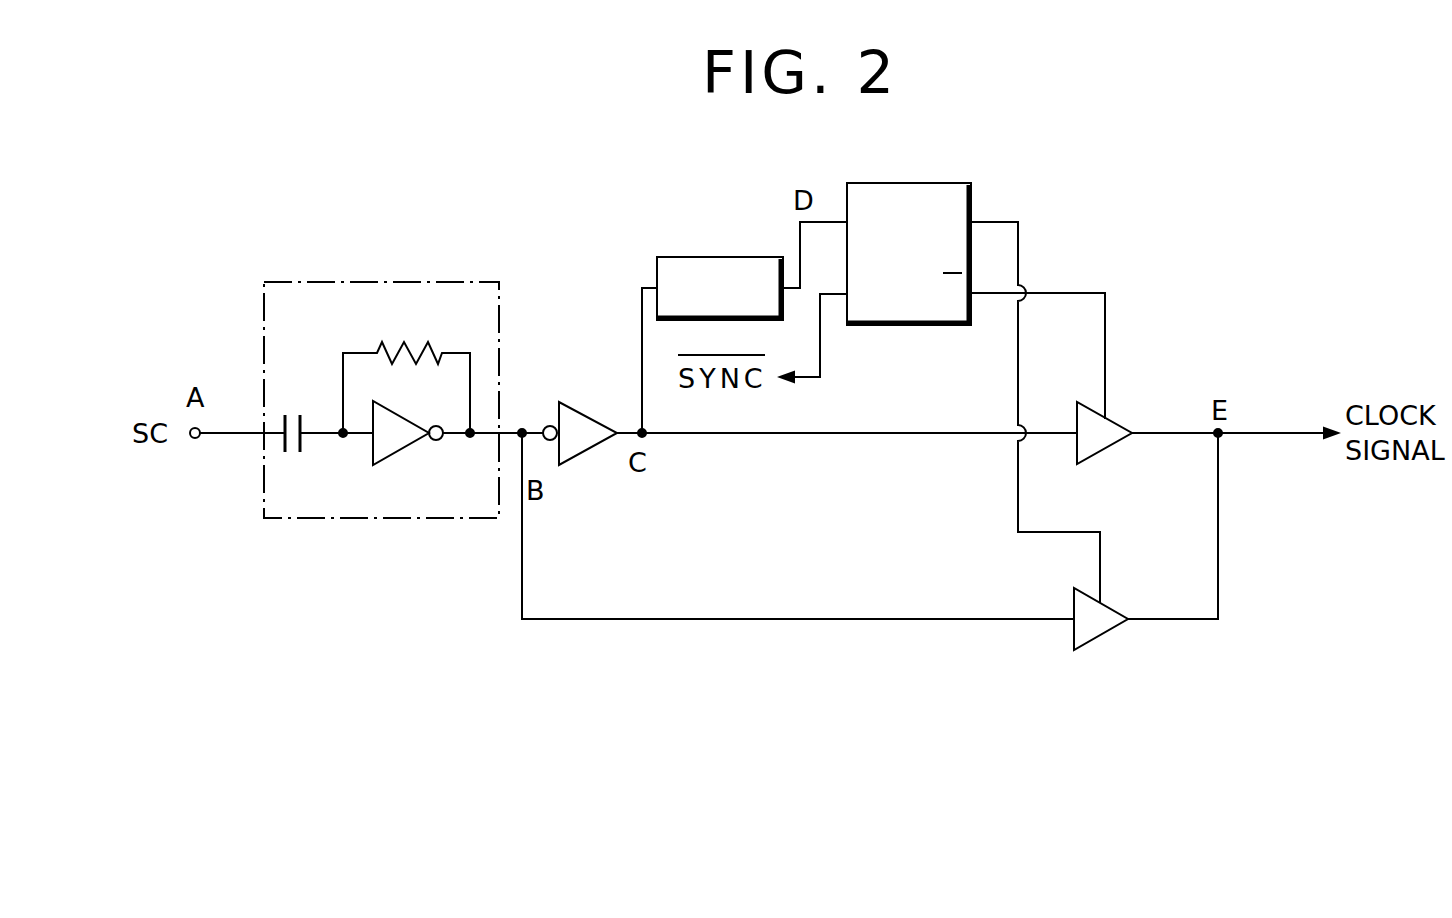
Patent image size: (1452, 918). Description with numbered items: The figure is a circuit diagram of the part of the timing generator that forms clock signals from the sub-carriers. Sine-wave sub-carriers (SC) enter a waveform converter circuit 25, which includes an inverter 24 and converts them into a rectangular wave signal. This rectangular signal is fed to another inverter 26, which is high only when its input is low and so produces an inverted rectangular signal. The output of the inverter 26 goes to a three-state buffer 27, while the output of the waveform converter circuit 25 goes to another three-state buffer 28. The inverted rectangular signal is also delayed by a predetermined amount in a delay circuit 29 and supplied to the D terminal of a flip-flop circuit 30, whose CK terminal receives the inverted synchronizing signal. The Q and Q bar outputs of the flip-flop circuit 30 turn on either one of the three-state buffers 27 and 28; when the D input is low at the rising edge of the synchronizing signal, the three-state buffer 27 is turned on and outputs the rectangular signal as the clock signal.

The inverter 24 is at (393, 452).
The waveform converter circuit 25 is at (385, 380).
The inverter 26 is at (578, 403).
The three-state buffer 27 is at (1080, 402).
The three-state buffer 28 is at (1088, 642).
The delay circuit 29 is at (728, 257).
The flip-flop circuit 30 is at (921, 183).